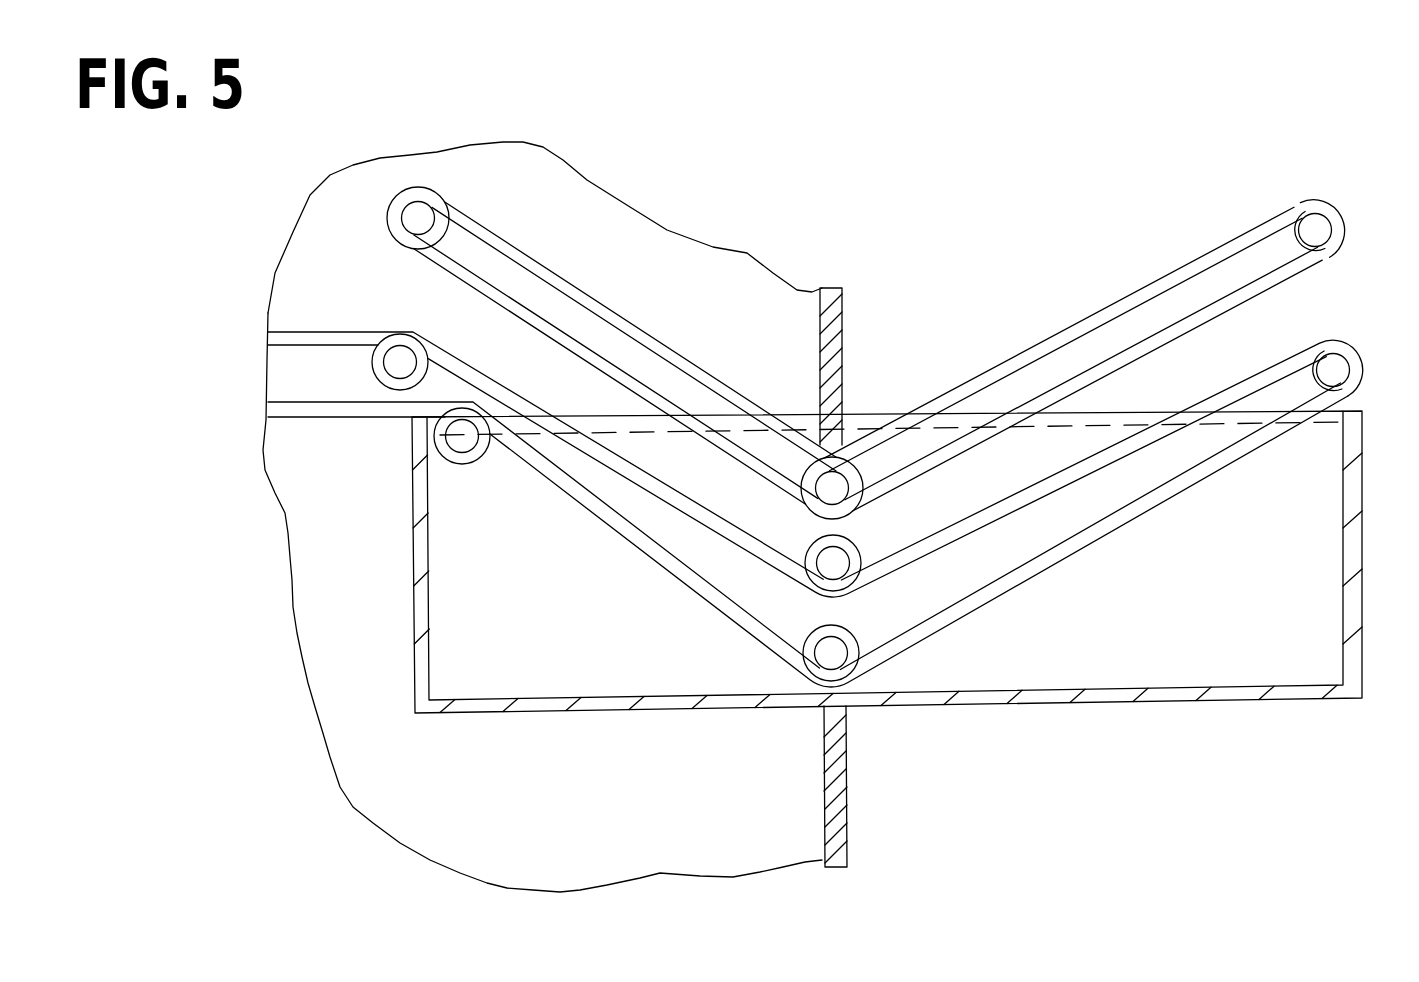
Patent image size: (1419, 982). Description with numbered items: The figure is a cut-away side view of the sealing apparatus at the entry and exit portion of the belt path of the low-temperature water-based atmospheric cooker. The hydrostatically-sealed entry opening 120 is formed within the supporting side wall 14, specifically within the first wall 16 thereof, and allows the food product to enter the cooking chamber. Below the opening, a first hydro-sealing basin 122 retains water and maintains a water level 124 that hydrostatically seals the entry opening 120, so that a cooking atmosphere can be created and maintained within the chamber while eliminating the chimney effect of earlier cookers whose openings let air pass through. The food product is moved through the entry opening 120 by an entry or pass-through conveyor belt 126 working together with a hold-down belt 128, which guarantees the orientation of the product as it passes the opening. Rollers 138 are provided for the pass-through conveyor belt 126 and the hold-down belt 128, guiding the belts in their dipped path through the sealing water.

The rollers 138 is at (419, 221).
The hold-down belt 128 is at (632, 318).
The entry conveyor belt 126 is at (1120, 522).
The water level 124 is at (1128, 402).
The first hydro-sealing basin 122 is at (1363, 585).
The entry opening 120 is at (686, 612).
The first wall 16 is at (848, 766).
The supporting side wall 14 is at (859, 810).